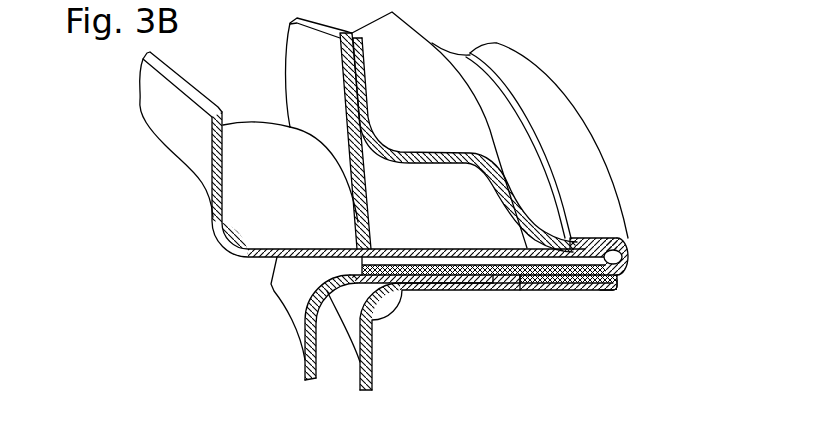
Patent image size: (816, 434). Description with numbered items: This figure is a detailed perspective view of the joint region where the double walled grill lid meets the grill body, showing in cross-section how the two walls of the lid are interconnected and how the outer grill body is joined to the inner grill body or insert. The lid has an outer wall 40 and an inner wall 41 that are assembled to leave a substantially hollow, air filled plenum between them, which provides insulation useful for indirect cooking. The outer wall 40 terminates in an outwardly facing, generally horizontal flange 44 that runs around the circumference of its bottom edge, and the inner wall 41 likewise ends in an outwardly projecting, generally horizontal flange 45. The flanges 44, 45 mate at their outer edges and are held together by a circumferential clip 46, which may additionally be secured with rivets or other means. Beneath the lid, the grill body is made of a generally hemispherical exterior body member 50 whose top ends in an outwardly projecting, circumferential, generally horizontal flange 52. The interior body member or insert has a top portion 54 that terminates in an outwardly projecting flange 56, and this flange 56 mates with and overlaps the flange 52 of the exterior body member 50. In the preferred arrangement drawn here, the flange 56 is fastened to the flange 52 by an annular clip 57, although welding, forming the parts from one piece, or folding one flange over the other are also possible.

The outer wall 40 is at (368, 88).
The inner wall 41 is at (212, 180).
The outwardly facing flange 44 is at (632, 253).
The outwardly projecting flange 45 is at (510, 228).
The circumferential clip 46 is at (583, 238).
The exterior body member 50 is at (373, 334).
The flange 52 is at (568, 286).
The top portion 54 is at (308, 382).
The flange 56 is at (497, 283).
The annular clip 57 is at (623, 286).